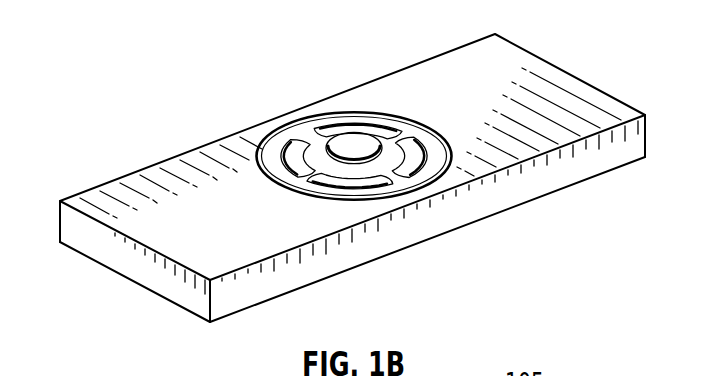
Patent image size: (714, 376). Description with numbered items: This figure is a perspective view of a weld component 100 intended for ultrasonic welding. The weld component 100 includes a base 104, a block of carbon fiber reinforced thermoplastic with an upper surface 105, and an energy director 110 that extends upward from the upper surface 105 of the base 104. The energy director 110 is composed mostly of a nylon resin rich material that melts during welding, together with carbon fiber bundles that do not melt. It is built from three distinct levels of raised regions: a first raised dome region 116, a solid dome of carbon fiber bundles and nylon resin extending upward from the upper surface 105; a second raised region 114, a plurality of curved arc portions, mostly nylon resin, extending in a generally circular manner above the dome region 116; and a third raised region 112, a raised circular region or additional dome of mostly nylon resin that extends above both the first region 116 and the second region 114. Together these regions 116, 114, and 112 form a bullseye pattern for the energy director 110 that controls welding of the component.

The weld component 100 is at (556, 26).
The base 104 is at (113, 249).
The upper surface 105 is at (127, 193).
The energy director 110 is at (283, 124).
The third raised region 112 is at (355, 147).
The second raised region 114 is at (350, 188).
The first raised dome region 116 is at (438, 155).